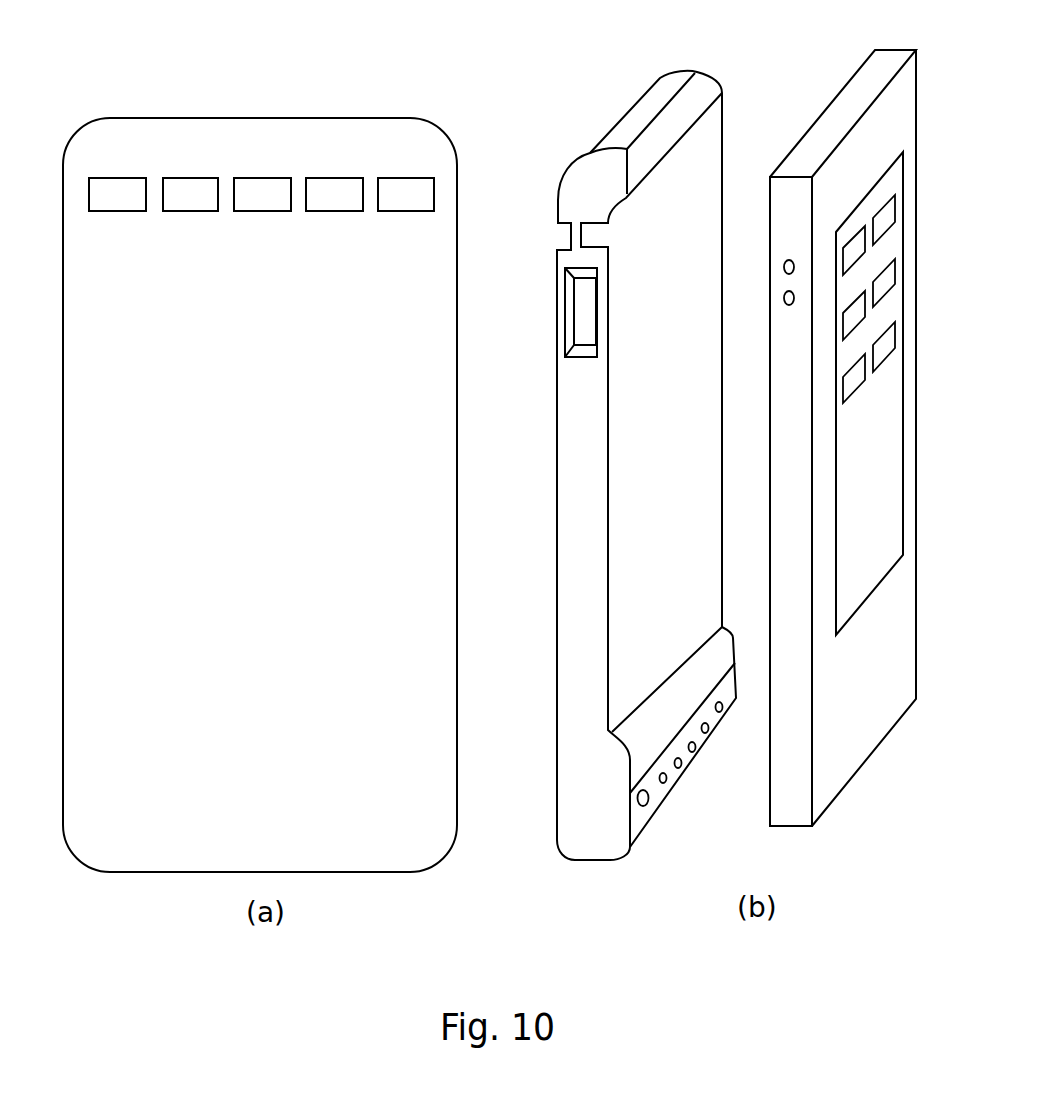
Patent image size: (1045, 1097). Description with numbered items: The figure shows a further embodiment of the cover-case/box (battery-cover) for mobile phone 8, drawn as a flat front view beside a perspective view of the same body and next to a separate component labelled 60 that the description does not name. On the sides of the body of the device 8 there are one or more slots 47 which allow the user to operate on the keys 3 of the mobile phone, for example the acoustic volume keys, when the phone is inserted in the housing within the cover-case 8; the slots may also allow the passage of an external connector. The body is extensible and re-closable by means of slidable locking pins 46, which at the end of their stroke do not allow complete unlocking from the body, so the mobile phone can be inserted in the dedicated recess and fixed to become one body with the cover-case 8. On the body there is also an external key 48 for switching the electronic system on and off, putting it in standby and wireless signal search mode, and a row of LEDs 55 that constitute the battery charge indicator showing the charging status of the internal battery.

The cover-case/box (battery-cover) for mobile phone 8 is at (620, 113).
The locking pins 46 is at (333, 200).
The slots 47 is at (575, 357).
The external key 48 is at (646, 805).
The LEDs 55 is at (721, 711).
The cradle 60 is at (890, 98).
The keys 3 is at (784, 268).